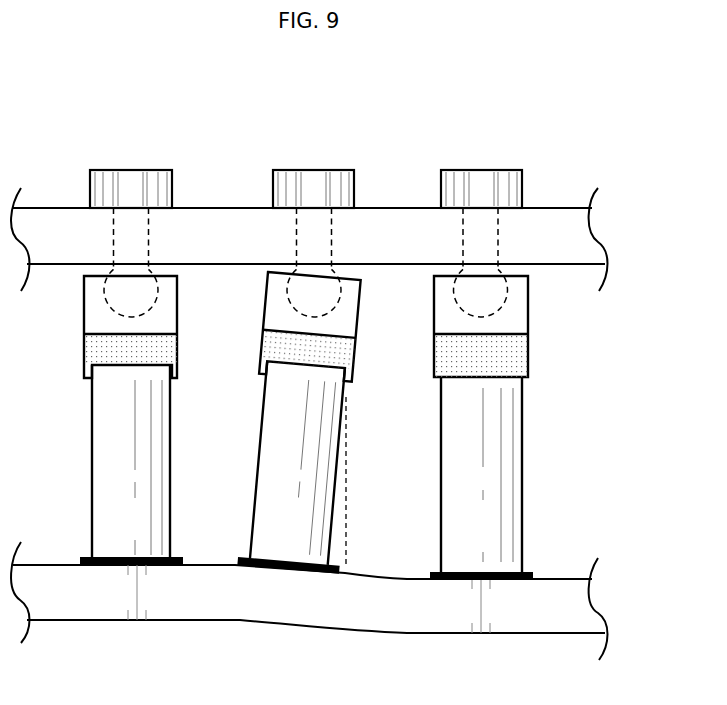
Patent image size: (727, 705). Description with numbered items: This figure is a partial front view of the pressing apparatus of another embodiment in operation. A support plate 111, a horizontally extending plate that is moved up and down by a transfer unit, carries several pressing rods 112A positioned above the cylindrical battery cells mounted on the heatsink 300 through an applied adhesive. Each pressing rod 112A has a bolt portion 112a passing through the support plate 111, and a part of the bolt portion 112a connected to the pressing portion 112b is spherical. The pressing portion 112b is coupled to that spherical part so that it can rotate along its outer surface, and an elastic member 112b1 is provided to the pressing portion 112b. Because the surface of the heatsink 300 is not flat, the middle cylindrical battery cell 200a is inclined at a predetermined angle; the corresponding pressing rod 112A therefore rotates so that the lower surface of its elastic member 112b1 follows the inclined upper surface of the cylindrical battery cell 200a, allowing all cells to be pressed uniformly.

The support plate 111 is at (398, 257).
The pressing rod 112A is at (306, 151).
The bolt portion 112a is at (335, 171).
The pressing portion 112b is at (297, 420).
The elastic member 112b1 is at (258, 355).
The cylindrical battery cell 200a is at (255, 485).
The heatsink 300 is at (197, 610).